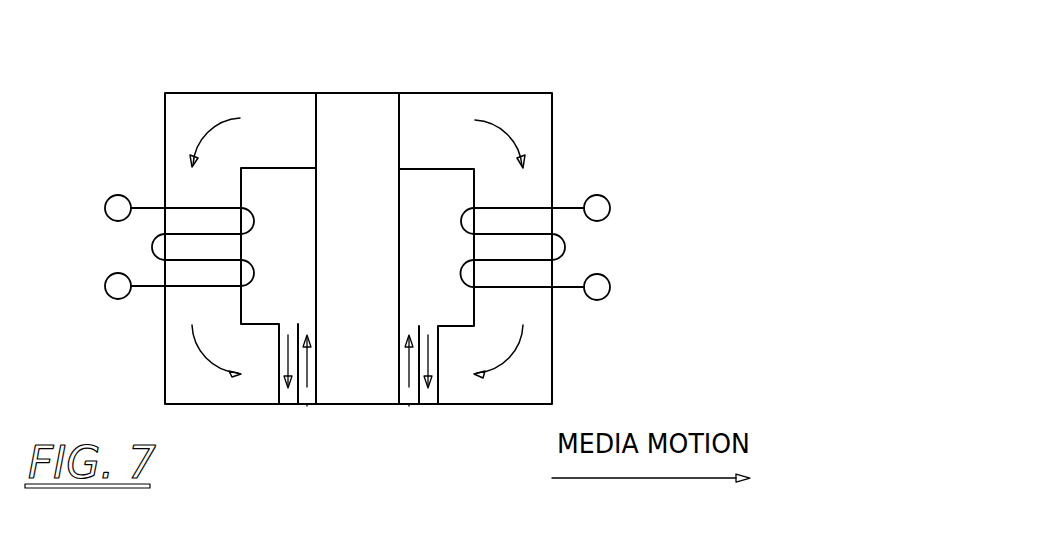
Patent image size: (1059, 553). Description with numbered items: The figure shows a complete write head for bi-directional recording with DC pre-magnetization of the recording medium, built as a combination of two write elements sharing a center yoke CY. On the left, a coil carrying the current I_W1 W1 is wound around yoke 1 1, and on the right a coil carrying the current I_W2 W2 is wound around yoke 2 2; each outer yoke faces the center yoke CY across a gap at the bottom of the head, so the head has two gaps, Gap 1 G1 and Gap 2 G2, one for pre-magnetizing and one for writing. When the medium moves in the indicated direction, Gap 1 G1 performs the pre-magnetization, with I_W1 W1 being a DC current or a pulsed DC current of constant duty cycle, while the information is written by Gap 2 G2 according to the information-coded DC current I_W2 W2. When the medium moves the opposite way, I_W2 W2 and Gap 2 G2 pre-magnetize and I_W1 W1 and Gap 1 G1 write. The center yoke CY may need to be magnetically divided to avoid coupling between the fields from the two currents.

The yoke 1 is at (180, 248).
The yoke 2 is at (534, 248).
The center yoke CY is at (339, 132).
The current I_ W1 is at (59, 207).
The current I_ W2 is at (695, 210).
The Gap 1 G1 is at (307, 408).
The Gap 2 G2 is at (409, 408).